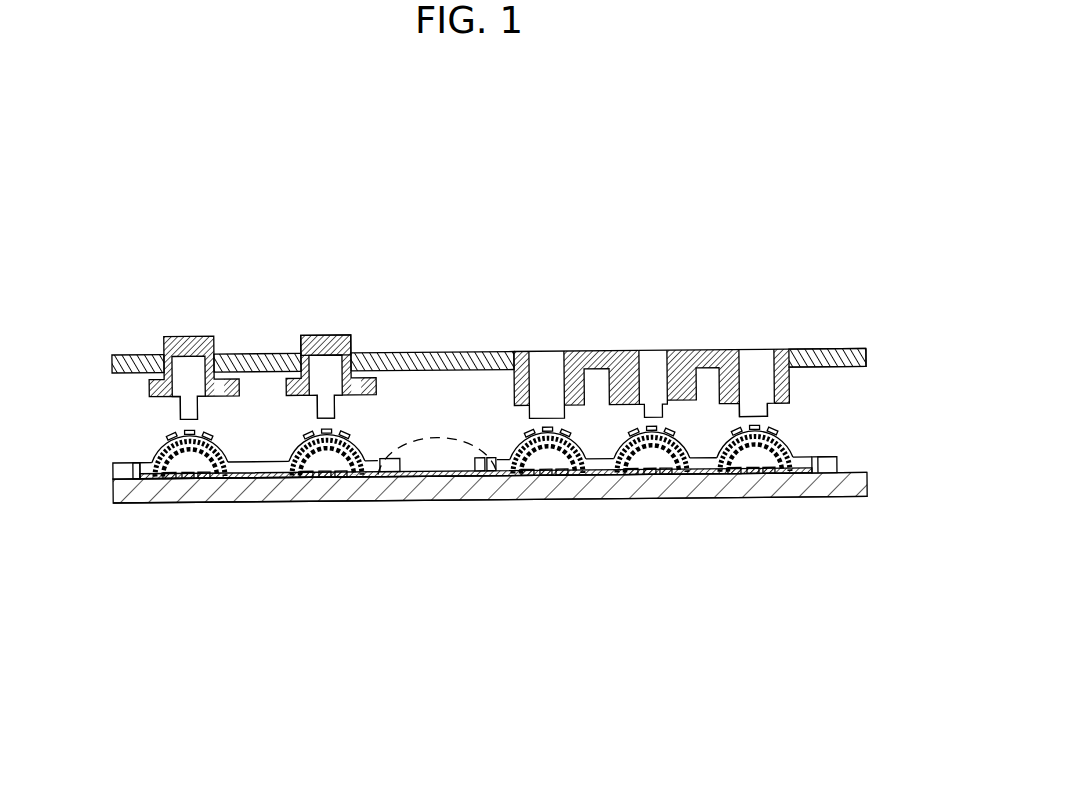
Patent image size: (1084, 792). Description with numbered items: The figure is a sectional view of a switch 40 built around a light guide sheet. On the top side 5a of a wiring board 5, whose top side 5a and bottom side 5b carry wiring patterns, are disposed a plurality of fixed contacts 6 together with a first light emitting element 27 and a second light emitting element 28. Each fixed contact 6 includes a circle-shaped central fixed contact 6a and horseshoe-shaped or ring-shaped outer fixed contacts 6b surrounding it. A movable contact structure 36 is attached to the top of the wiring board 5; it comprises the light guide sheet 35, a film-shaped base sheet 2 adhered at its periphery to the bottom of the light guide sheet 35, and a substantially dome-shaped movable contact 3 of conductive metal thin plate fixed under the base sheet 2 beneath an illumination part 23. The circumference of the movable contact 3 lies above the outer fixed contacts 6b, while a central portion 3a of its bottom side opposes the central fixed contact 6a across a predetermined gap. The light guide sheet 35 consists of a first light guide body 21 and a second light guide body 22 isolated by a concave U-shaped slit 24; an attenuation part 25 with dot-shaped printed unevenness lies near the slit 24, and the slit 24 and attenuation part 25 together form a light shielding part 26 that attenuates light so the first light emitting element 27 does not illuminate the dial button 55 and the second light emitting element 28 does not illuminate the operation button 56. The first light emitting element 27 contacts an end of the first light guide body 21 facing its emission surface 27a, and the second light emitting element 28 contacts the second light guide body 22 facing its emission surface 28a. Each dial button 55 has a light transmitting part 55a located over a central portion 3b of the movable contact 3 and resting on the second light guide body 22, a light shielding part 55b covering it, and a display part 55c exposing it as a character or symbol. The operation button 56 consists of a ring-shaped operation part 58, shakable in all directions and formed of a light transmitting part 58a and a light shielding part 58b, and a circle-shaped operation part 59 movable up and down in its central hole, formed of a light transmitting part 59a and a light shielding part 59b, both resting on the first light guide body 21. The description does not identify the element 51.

The switch 40 is at (887, 673).
The wiring board 5 is at (844, 487).
The top side 5a is at (843, 487).
The bottom side 5b is at (862, 500).
The second light emitting element 28 is at (130, 470).
The emission surface 28a is at (138, 477).
The first light emitting element 27 is at (825, 472).
The emission surface 27a is at (820, 463).
The slit 24 is at (438, 462).
The base sheet 2 is at (703, 470).
The fixed contact 6 is at (310, 561).
The central fixed contact 6a is at (188, 478).
The outer fixed contacts 6b is at (327, 478).
The movable contact structure 36 is at (780, 616).
The light guide sheet 35 is at (662, 560).
The second light guide body 22 is at (384, 475).
The attenuation part 25 is at (492, 465).
The light shielding part 26 is at (452, 435).
The first light guide body 21 is at (598, 472).
The illumination part 23 is at (650, 453).
The movable contact 3 is at (755, 452).
The central portion 3a is at (752, 453).
The central portion 3b is at (768, 417).
The head plate 51 is at (456, 357).
The dial button 55 is at (390, 257).
The light transmitting part 55a is at (327, 403).
The light shielding part 55b is at (300, 337).
The display part 55c is at (317, 337).
The operation button 56 is at (777, 199).
The circle-shaped operation part 59 is at (683, 254).
The light transmitting part 59a is at (653, 363).
The light shielding part 59b is at (628, 360).
The ring-shaped operation part 58 is at (815, 254).
The light transmitting part 58a is at (755, 360).
The light shielding part 58b is at (782, 356).